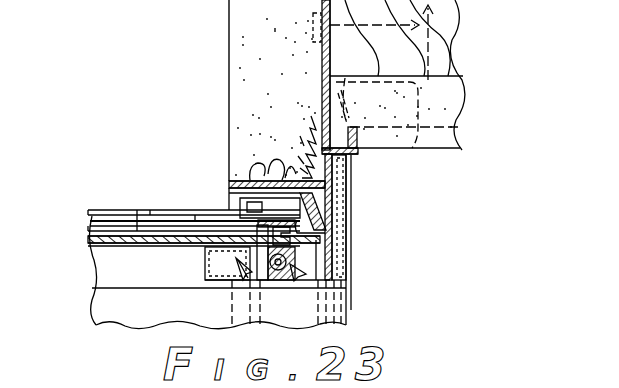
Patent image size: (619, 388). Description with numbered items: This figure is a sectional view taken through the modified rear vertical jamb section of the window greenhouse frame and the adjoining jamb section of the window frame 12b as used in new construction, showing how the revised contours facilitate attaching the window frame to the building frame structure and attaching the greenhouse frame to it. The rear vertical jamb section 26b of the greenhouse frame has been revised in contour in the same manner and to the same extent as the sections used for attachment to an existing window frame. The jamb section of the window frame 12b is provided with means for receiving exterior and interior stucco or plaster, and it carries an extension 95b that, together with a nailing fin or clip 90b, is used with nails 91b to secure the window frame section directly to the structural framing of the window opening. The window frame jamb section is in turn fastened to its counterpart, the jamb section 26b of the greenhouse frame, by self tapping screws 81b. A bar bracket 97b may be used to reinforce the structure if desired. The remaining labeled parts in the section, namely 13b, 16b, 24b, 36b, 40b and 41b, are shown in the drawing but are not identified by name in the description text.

The window frame 12b is at (248, 170).
The wall 13b is at (229, 34).
The anchor bracket 16b is at (346, 250).
The frame member 24b is at (141, 219).
The rear vertical jamb section 26b is at (217, 200).
The frame assembly 36b is at (88, 240).
The wall structure 40b is at (107, 257).
The frame member 41b is at (197, 213).
The self tapping screws 81b is at (347, 180).
The nailing fins or clips 90b is at (413, 150).
The nails 91b is at (420, 64).
The extensions 95b is at (322, 104).
The bar bracket 97b is at (150, 210).